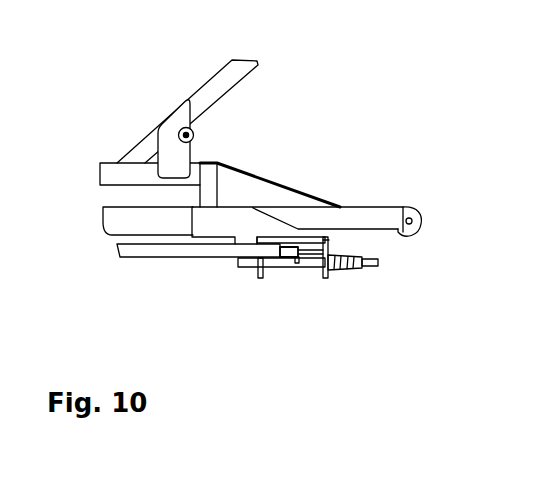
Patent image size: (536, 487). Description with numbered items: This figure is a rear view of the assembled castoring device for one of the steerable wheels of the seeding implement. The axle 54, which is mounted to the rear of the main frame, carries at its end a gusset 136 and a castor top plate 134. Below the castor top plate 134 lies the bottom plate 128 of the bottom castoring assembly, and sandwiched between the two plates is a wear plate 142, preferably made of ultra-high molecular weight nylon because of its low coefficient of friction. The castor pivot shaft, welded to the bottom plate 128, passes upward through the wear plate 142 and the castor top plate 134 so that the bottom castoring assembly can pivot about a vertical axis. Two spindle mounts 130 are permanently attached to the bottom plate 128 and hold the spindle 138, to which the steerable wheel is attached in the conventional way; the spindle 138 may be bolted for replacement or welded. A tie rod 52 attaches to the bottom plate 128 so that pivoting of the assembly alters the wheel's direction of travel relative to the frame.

The tie rod 52 is at (168, 250).
The axle 54 is at (128, 220).
The bottom plate 128 is at (367, 270).
The spindle mounts 130 is at (323, 276).
The castor top plate 134 is at (325, 236).
The gusset 136 is at (245, 227).
The spindle 138 is at (343, 268).
The wear plate 142 is at (328, 240).